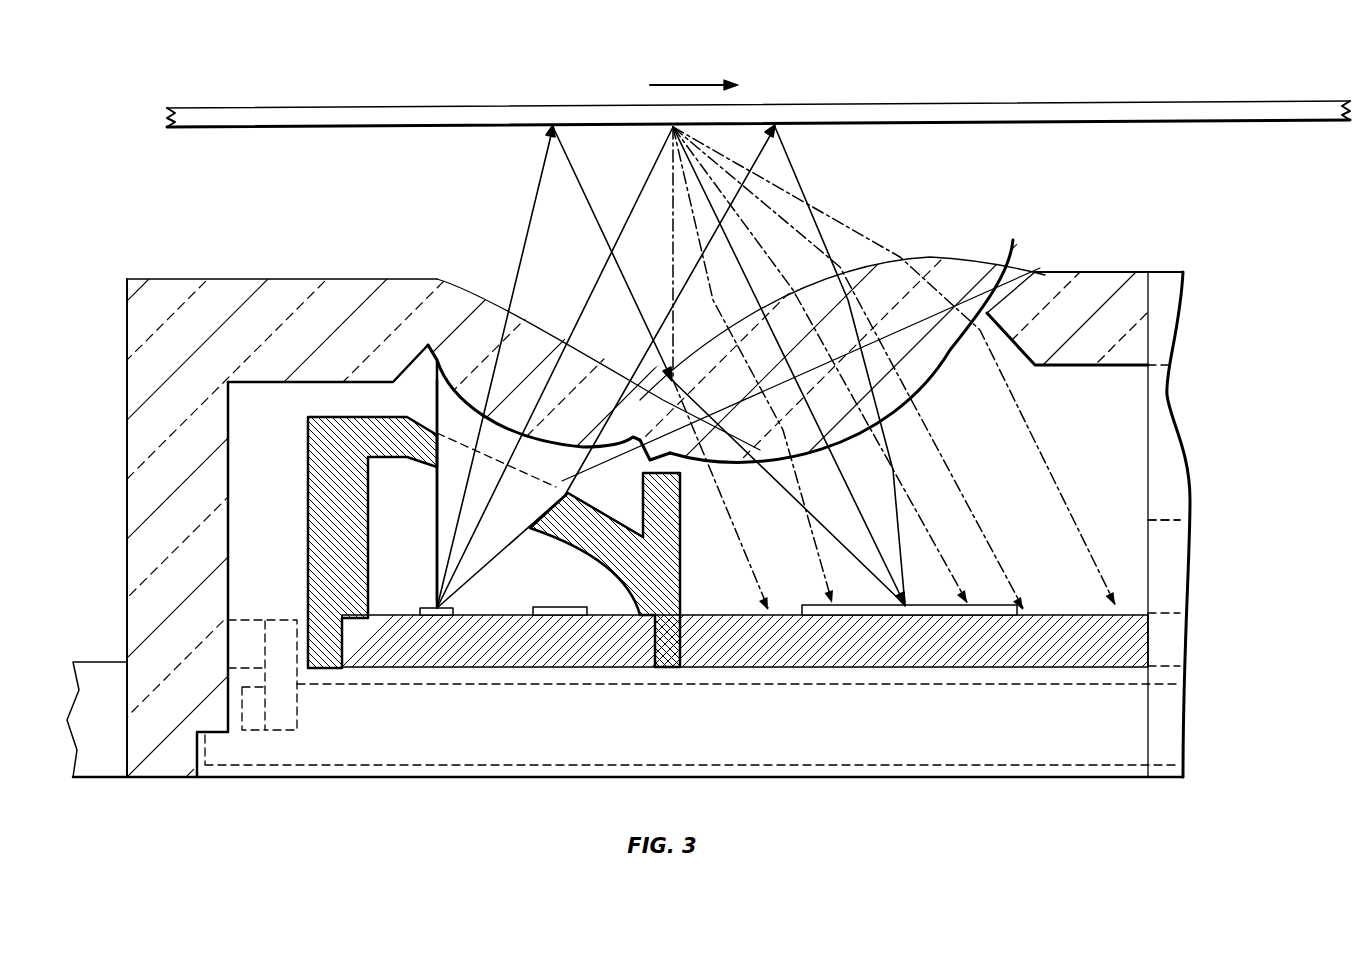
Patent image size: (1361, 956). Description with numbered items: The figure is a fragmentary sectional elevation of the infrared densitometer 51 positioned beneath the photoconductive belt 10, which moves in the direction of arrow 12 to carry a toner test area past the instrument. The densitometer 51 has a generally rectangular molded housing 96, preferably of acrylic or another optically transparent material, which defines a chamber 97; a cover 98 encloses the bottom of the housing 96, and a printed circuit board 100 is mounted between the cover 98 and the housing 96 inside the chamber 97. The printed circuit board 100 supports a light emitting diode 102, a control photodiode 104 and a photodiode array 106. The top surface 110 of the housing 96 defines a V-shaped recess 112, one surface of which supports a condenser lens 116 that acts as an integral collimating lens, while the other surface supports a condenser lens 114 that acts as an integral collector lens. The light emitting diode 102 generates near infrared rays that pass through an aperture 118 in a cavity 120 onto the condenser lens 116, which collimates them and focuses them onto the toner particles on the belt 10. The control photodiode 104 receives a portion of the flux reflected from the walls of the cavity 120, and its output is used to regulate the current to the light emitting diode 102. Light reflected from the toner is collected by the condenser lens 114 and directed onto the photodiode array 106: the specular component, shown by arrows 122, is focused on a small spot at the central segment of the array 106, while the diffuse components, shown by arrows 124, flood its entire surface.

The belt 10 is at (943, 106).
The arrow 12 is at (700, 84).
The infrared densitometer 51 is at (1212, 512).
The housing 96 is at (230, 458).
The chamber 97 is at (1125, 425).
The cover 98 is at (442, 780).
The printed circuit board 100 is at (1150, 648).
The light emitting diode 102 is at (436, 616).
The control photodiode 104 is at (553, 614).
The photodiode array 106 is at (931, 610).
The top surface 110 is at (232, 280).
The V-shaped recess 112 is at (588, 240).
The condenser lens 114 is at (977, 345).
The condenser lens 116 is at (512, 340).
The aperture 118 is at (472, 470).
The cavity 120 is at (307, 547).
The arrows 122 is at (905, 388).
The arrows 124 is at (1065, 480).